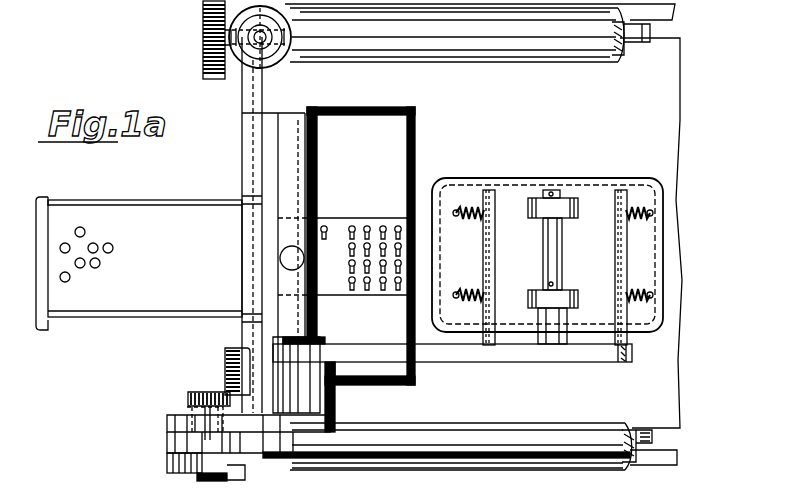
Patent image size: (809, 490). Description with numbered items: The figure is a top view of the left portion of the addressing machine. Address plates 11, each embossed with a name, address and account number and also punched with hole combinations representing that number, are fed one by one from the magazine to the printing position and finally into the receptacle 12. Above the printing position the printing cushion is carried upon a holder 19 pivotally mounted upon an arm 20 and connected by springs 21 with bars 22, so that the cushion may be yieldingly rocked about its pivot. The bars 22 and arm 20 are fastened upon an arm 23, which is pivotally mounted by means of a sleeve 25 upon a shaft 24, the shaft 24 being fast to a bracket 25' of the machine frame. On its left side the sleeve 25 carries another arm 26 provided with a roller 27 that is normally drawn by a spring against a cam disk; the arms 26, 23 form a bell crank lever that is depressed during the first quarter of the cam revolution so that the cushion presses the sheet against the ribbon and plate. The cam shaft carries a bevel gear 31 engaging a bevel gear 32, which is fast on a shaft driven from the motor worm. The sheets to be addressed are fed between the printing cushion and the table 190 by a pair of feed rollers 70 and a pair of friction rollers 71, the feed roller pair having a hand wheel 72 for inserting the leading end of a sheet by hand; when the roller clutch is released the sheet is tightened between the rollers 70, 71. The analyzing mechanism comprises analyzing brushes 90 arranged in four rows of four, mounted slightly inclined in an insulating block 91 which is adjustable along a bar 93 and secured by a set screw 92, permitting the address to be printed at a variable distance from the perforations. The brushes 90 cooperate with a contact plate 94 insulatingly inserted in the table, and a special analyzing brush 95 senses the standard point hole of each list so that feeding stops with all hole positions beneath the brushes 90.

The address plate 11 is at (146, 207).
The receptacle 12 is at (54, 198).
The holder 19 is at (654, 328).
The arm 20 is at (552, 190).
The springs 21 is at (466, 222).
The bars 22 is at (488, 190).
The arm 23 is at (548, 356).
The shaft 24 is at (446, 471).
The sleeve 25 is at (344, 397).
The bracket 25' is at (227, 477).
The arm 26 is at (207, 420).
The roller 27 is at (178, 462).
The bevel gear 31 is at (205, 392).
The bevel gear 32 is at (225, 360).
The feed rollers 70 is at (641, 33).
The friction rollers 71 is at (641, 430).
The hand wheel 72 is at (204, 19).
The analyzing brushes 90 is at (352, 287).
The insulating block 91 is at (341, 290).
The set screw 92 is at (291, 246).
The bar 93 is at (282, 113).
The contact plate 94 is at (414, 130).
The special analyzing brush 95 is at (326, 225).
The table 190 is at (483, 234).